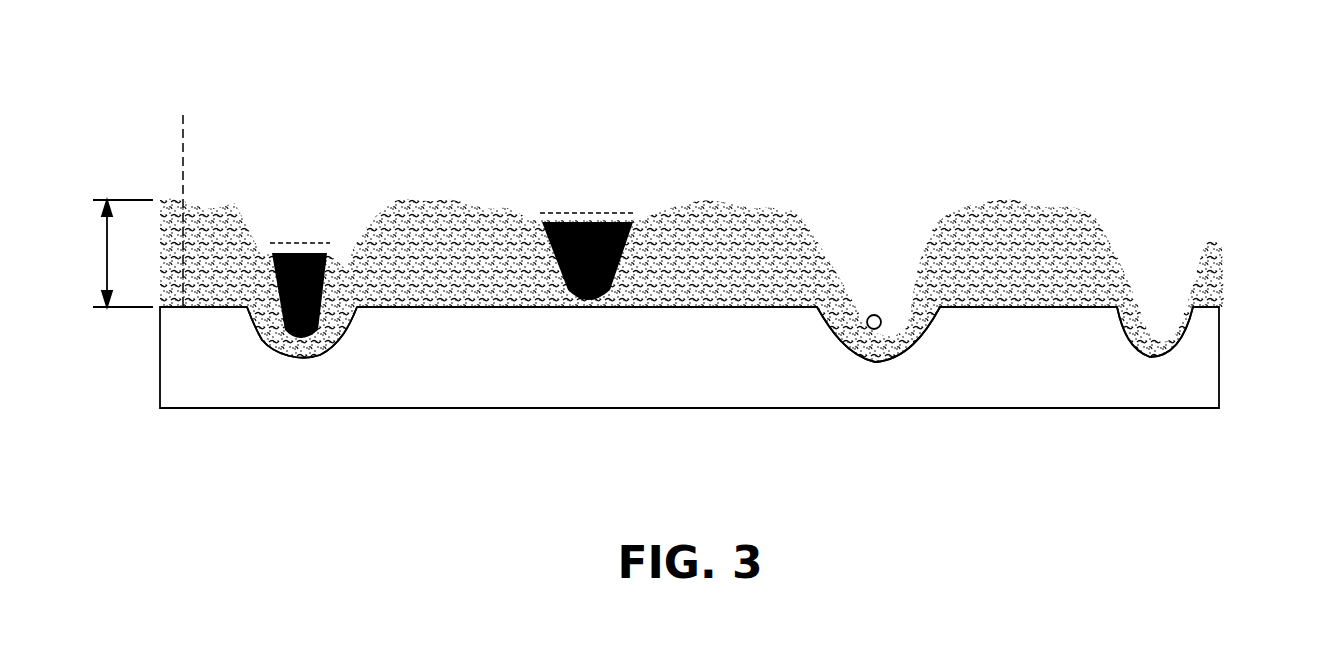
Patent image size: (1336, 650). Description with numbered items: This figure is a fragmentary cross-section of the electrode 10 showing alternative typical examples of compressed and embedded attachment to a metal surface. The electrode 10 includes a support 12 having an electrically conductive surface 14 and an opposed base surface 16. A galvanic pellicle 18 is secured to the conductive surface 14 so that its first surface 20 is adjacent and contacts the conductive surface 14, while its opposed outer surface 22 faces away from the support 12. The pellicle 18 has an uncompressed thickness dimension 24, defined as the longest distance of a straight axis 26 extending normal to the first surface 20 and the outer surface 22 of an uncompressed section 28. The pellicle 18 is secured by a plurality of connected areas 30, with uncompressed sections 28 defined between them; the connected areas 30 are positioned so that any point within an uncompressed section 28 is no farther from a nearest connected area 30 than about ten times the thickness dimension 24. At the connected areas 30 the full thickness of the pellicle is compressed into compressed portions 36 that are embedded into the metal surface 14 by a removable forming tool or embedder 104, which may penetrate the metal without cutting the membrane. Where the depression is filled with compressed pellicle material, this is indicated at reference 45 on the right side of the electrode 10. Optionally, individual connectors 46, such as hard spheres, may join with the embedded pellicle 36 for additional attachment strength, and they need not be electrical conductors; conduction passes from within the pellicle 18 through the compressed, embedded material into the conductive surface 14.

The electrode 10 is at (1187, 114).
The support 12 is at (1000, 411).
The electrically conductive surface 14 is at (802, 307).
The base surface 16 is at (1077, 408).
The galvanic pellicle 18 is at (1221, 254).
The first surface 20 is at (745, 307).
The outer surface 22 is at (205, 208).
The uncompressed thickness dimension 24 is at (107, 245).
The straight axis 26 is at (183, 115).
The uncompressed section 28 is at (495, 210).
The connected area 30 is at (286, 227).
The compressed portion 36 is at (305, 360).
The embedded connected area 45 is at (1187, 323).
The individual connector 46 is at (877, 314).
The embedder 104 is at (317, 255).